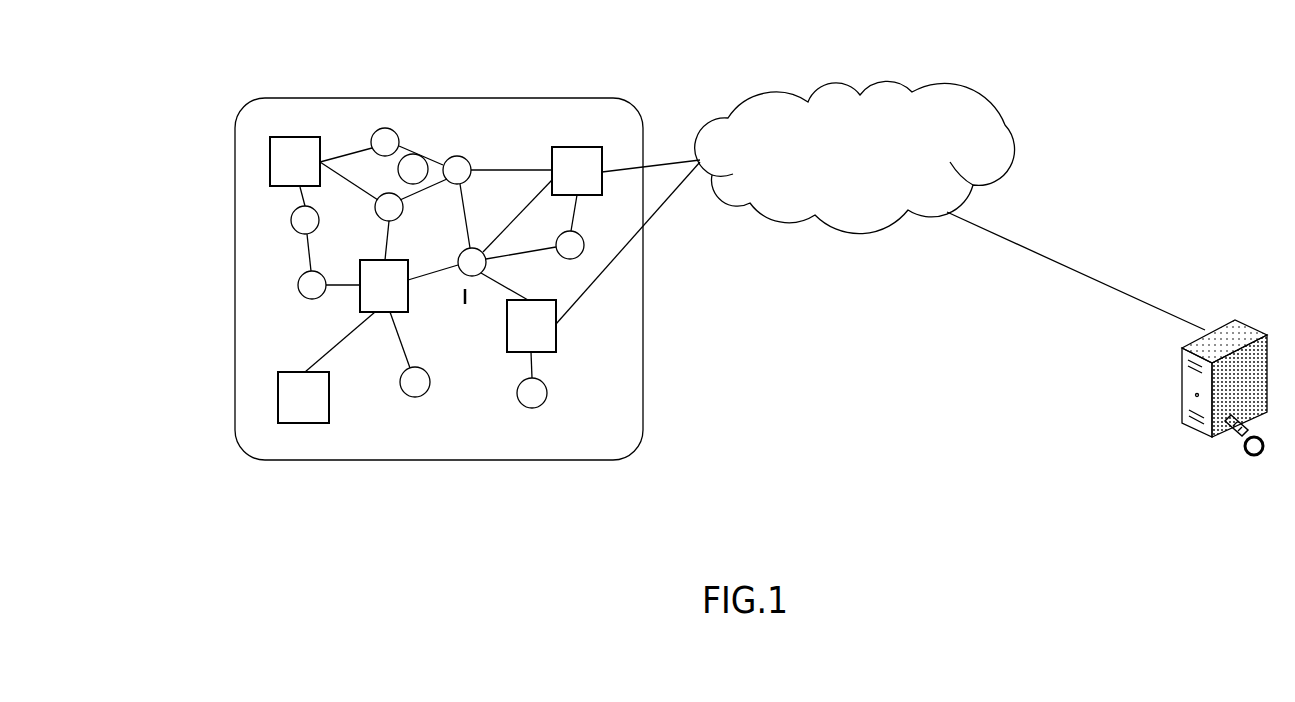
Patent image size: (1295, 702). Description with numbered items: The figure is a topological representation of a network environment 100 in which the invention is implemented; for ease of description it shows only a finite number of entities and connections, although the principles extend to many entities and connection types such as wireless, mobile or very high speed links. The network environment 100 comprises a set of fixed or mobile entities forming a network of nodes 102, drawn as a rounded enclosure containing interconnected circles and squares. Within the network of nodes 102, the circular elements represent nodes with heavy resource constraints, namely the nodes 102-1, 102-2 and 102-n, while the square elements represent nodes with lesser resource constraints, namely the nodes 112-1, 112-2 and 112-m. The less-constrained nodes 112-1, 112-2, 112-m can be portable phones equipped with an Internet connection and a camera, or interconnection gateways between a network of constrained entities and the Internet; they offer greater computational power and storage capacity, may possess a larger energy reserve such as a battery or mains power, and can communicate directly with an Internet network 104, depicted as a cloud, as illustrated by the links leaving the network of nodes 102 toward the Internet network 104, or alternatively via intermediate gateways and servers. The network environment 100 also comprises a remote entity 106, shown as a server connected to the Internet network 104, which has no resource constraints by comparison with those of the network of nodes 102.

The network environment 100 is at (1115, 32).
The network of nodes 102 is at (430, 97).
The node with lesser resource constraints 112-2 is at (288, 165).
The node with heavy resource constraints 102-2 is at (303, 223).
The node with heavy resource constraints 102-1 is at (310, 287).
The node with lesser resource constraints 112-1 is at (290, 412).
The node with lesser resource constraints 112-m is at (558, 340).
The node with heavy resource constraints 102-n is at (547, 398).
The Internet network 104 is at (1008, 170).
The remote entity 106 is at (1180, 422).